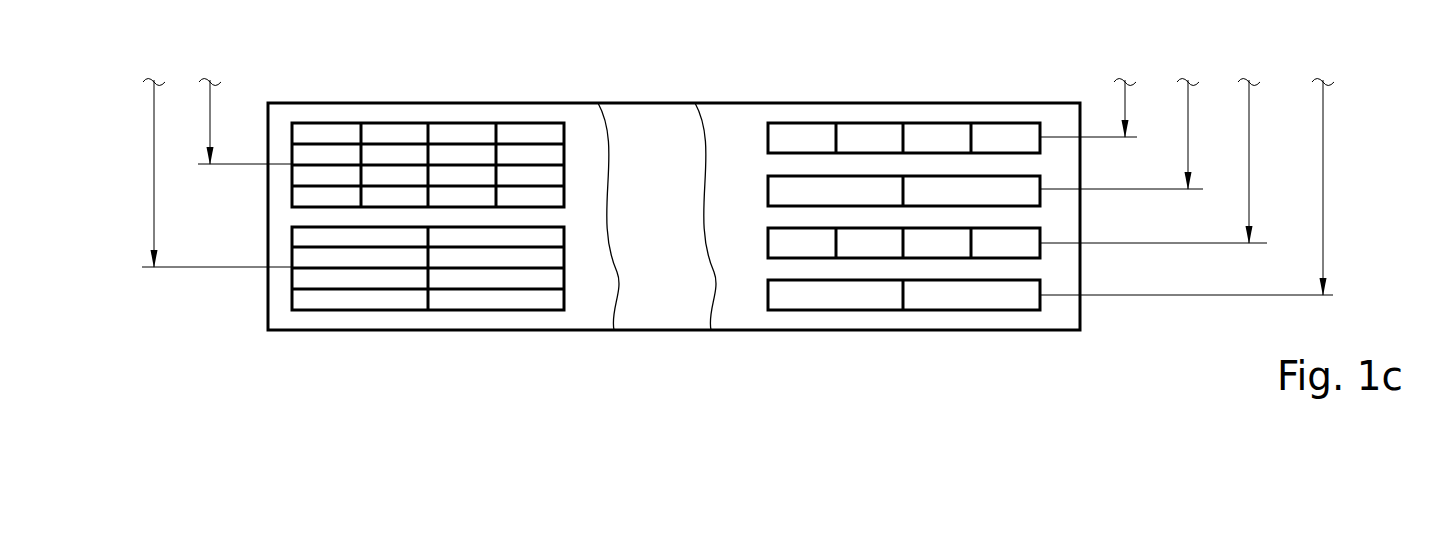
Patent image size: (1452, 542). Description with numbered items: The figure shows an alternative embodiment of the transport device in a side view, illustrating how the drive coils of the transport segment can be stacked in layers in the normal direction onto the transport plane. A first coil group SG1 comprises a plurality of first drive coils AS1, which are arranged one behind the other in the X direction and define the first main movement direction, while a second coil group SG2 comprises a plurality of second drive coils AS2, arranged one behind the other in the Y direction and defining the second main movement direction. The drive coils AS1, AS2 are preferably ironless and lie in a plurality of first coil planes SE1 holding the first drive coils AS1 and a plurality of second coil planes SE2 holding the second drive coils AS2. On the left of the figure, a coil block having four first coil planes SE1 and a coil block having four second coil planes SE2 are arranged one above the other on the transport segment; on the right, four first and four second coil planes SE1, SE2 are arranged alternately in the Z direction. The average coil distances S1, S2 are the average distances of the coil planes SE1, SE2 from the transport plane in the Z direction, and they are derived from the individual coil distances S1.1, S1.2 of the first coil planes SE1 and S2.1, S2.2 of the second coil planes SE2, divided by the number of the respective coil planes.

The first coil group SG1 is at (543, 108).
The second coil group SG2 is at (498, 314).
The first coil plane SE1 is at (777, 138).
The second coil plane SE2 is at (792, 188).
The first drive coil AS1 is at (532, 133).
The second drive coil AS2 is at (457, 299).
The first average coil distance S1 is at (237, 122).
The second average coil distance S2 is at (206, 173).
The coil distance of first first coil plane S1.1 is at (1111, 108).
The coil distance of first second coil plane S2.1 is at (1144, 134).
The coil distance of second first coil plane S1.2 is at (1175, 161).
The coil distance of second second coil plane S2.2 is at (1215, 187).